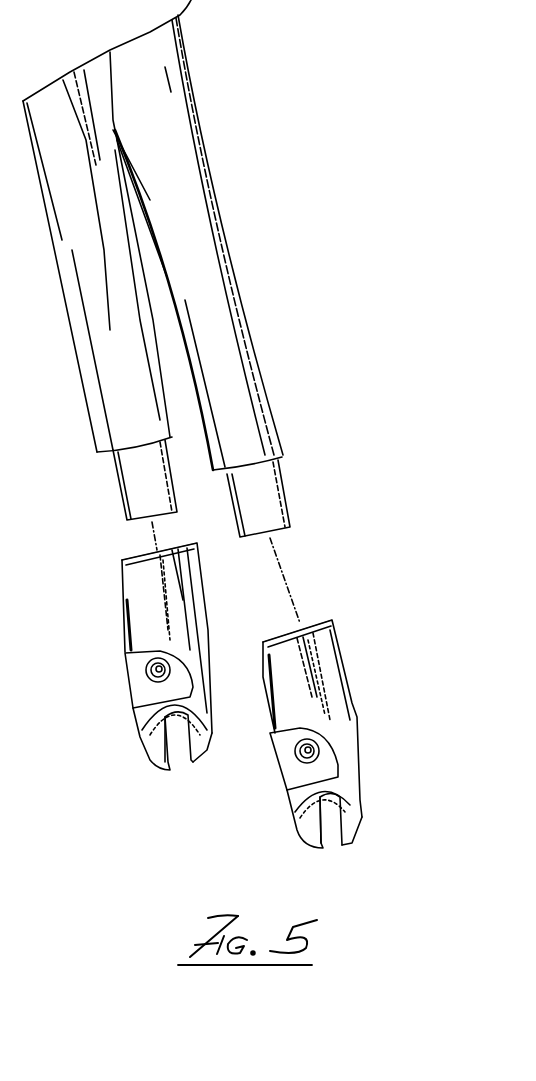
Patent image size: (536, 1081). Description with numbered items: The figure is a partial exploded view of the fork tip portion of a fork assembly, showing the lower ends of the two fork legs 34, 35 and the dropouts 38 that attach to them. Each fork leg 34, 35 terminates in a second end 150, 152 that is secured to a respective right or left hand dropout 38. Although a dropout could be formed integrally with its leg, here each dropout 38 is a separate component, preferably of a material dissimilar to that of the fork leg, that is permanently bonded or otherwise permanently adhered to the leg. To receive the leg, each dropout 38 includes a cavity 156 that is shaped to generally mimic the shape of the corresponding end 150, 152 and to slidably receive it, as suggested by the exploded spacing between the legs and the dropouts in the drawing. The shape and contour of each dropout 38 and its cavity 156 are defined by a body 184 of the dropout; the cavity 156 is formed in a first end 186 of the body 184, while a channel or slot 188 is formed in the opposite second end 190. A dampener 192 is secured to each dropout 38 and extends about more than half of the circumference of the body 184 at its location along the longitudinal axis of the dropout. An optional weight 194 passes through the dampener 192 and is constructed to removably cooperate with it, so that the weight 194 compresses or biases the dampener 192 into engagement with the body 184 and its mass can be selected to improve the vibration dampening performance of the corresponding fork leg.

The fork leg 34 is at (70, 343).
The fork leg 35 is at (245, 293).
The dropout 38 is at (143, 580).
The second end 150 is at (277, 437).
The second end 152 is at (97, 445).
The cavity 156 is at (244, 690).
The body 184 is at (165, 607).
The first end 186 is at (210, 508).
The slot 188 is at (181, 765).
The second end 190 is at (160, 768).
The dampener 192 is at (123, 668).
The weight 194 is at (152, 678).